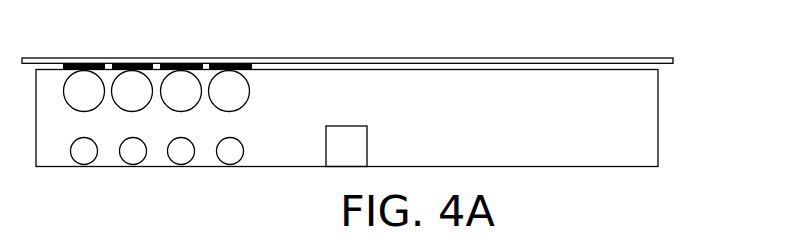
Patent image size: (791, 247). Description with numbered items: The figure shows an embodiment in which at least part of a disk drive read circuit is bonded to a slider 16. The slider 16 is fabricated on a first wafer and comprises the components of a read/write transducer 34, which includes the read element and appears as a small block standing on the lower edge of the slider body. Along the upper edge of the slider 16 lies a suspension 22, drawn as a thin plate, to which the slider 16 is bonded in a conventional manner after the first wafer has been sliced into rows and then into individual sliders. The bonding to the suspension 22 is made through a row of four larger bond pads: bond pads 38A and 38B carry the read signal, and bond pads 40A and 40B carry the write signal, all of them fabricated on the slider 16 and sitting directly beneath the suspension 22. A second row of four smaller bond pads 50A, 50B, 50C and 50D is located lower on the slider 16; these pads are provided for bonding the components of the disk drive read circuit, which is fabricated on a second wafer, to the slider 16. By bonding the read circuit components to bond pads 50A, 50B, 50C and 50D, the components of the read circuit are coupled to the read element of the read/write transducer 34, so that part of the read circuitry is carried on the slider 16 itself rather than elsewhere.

The slider 16 is at (658, 114).
The suspension 22 is at (629, 56).
The read/write transducer 34 is at (382, 121).
The bond pad 38A is at (230, 75).
The bond pad 38B is at (181, 75).
The bond pad 40A is at (85, 75).
The bond pad 40B is at (133, 75).
The bond pad 50A is at (229, 153).
The bond pad 50B is at (180, 153).
The bond pad 50C is at (132, 153).
The bond pad 50D is at (83, 153).